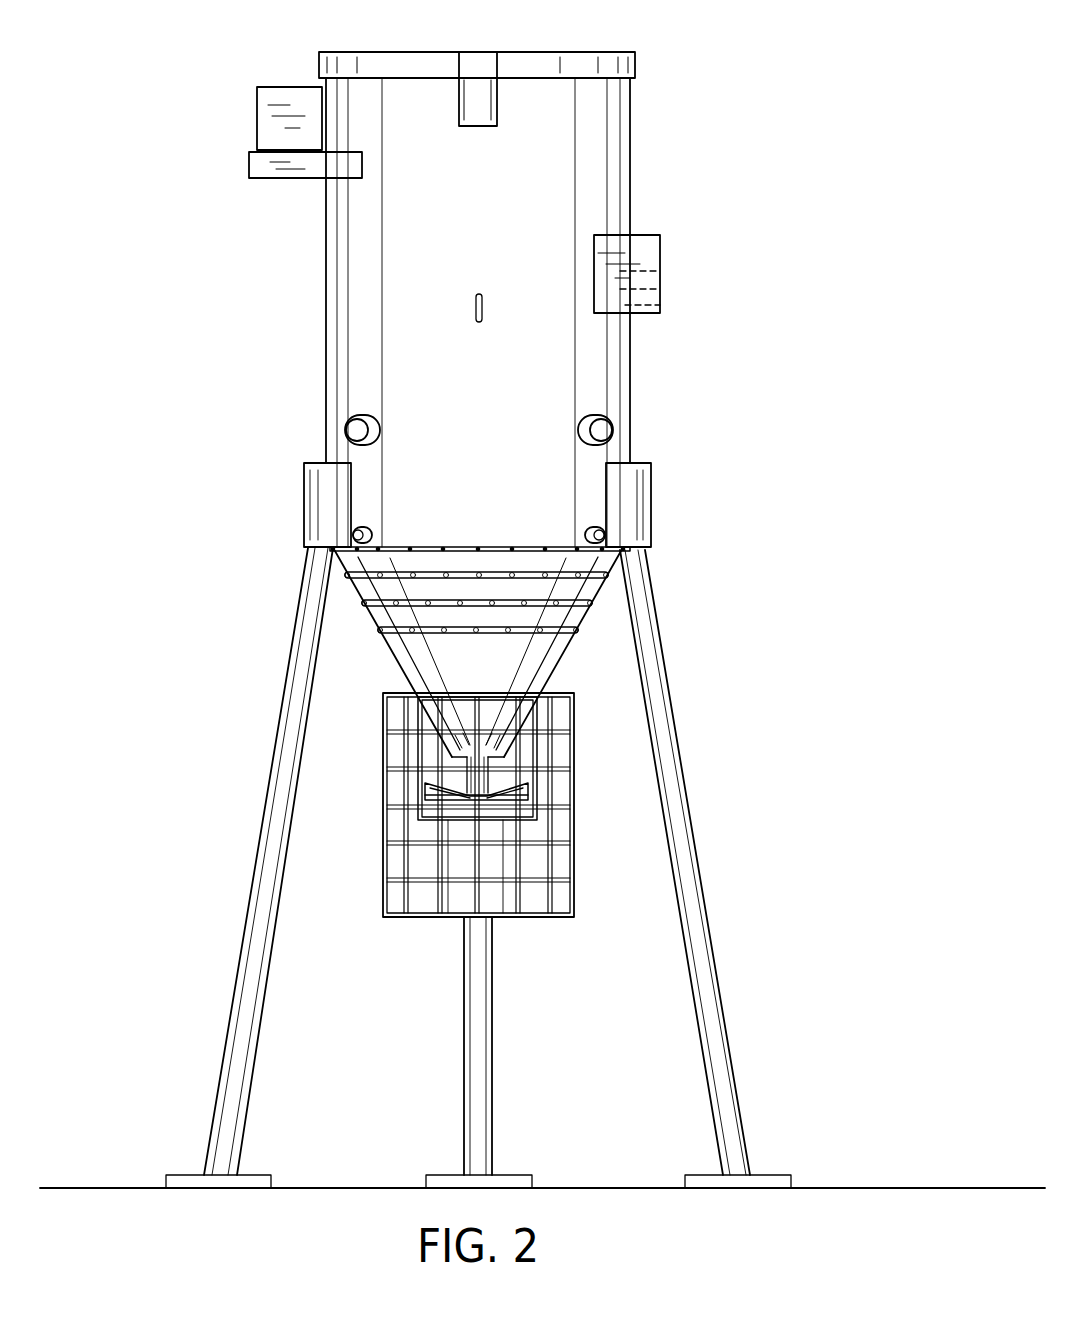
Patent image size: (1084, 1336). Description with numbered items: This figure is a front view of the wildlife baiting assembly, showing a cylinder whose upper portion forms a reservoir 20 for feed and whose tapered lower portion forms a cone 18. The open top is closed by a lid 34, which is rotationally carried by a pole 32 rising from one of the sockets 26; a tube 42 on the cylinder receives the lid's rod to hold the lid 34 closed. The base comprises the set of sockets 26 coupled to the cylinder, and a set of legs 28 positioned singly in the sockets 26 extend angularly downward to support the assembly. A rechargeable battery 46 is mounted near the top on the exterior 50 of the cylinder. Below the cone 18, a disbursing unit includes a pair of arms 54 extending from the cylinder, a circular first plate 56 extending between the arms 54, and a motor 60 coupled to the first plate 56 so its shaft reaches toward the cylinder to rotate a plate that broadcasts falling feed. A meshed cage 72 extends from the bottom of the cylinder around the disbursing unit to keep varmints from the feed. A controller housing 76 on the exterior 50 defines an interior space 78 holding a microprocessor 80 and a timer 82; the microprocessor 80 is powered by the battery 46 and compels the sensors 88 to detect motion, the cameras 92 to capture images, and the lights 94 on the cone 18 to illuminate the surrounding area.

The cone 18 is at (455, 657).
The reservoir 20 is at (383, 242).
The set of sockets 26 is at (330, 493).
The set of legs 28 is at (702, 954).
The pole 32 is at (480, 1093).
The lid 34 is at (372, 64).
The tube 42 is at (487, 104).
The battery 46 is at (270, 117).
The exterior 50 is at (507, 208).
The pair of arms 54 is at (537, 725).
The first plate 56 is at (460, 820).
The motor 60 is at (460, 890).
The cage 72 is at (574, 765).
The housing 76 is at (660, 243).
The interior space 78 is at (660, 271).
The microprocessor 80 is at (660, 289).
The timer 82 is at (660, 305).
The plurality of sensors 88 is at (594, 538).
The plurality of cameras 92 is at (578, 418).
The plurality of lights 94 is at (363, 603).